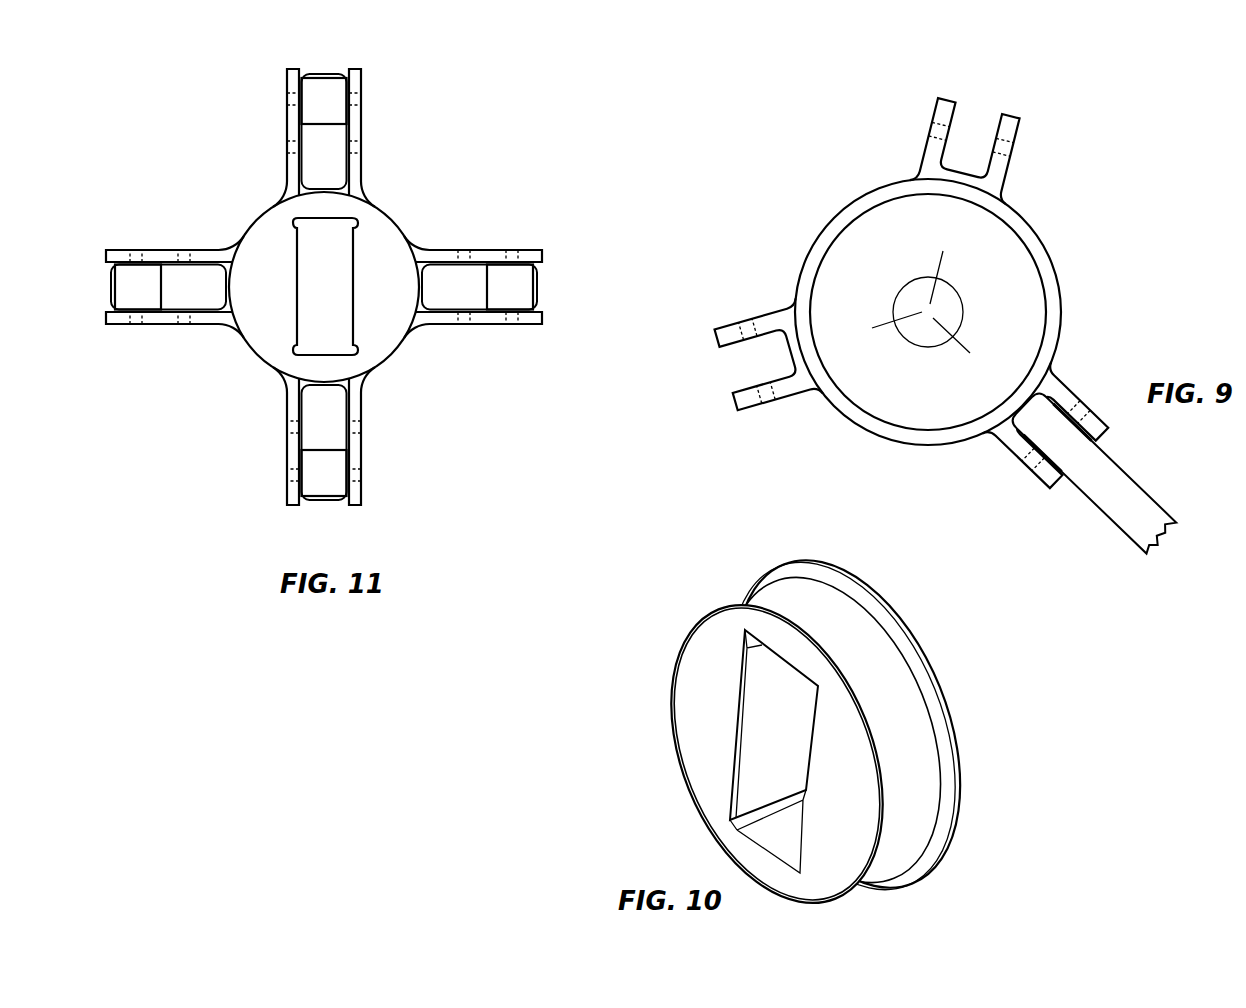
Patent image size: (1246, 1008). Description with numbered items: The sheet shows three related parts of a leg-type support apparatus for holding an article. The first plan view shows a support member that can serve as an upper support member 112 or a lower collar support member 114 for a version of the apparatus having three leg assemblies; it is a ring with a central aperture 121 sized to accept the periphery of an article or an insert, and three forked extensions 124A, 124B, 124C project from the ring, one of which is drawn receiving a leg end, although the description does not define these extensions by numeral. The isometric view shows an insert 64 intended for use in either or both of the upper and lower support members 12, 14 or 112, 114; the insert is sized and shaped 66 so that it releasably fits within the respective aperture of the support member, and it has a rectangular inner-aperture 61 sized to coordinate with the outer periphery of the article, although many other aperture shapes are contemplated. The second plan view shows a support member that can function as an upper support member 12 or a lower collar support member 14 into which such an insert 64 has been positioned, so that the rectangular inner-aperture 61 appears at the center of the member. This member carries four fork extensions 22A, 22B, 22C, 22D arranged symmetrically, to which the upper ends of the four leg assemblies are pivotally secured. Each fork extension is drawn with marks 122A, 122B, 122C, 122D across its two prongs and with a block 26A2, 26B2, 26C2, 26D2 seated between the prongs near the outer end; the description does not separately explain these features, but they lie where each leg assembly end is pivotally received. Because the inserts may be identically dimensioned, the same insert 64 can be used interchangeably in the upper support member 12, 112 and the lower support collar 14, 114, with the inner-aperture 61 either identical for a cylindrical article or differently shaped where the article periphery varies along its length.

In FIG. 11, the upper support member 12 is at (461, 156).
In FIG. 11, the lower support member 14 is at (335, 280).
In FIG. 11, the fork extension 22A is at (176, 243).
In FIG. 11, the fork extension 22B is at (496, 236).
In FIG. 11, the fork extension 22C is at (373, 121).
In FIG. 11, the fork extension 22D is at (270, 437).
In FIG. 11, the arm fold lines 122A is at (138, 249).
In FIG. 11, the arm fold lines 122B is at (515, 326).
In FIG. 11, the arm fold lines 122C is at (289, 147).
In FIG. 11, the arm fold lines 122D is at (364, 473).
In FIG. 11, the pin 26A2 is at (125, 297).
In FIG. 11, the pin 26B2 is at (524, 300).
In FIG. 11, the pin 26C2 is at (315, 85).
In FIG. 11, the pin 26D2 is at (337, 484).
In FIG. 11, the inner-aperture 61 is at (340, 315).
In FIG. 10, the inner-aperture 61 is at (764, 748).
In FIG. 11, the insert 64 is at (398, 266).
In FIG. 10, the insert 64 is at (974, 733).
In FIG. 10, the outer shape of insert 66 is at (768, 602).
In FIG. 9, the upper support member 112 is at (1107, 168).
In FIG. 9, the lower collar support member 114 is at (949, 321).
In FIG. 9, the aperture 121 is at (856, 247).
In FIG. 9, the forked arm 124A is at (727, 316).
In FIG. 9, the forked arm 124B is at (1026, 488).
In FIG. 9, the forked arm 124C is at (1027, 134).